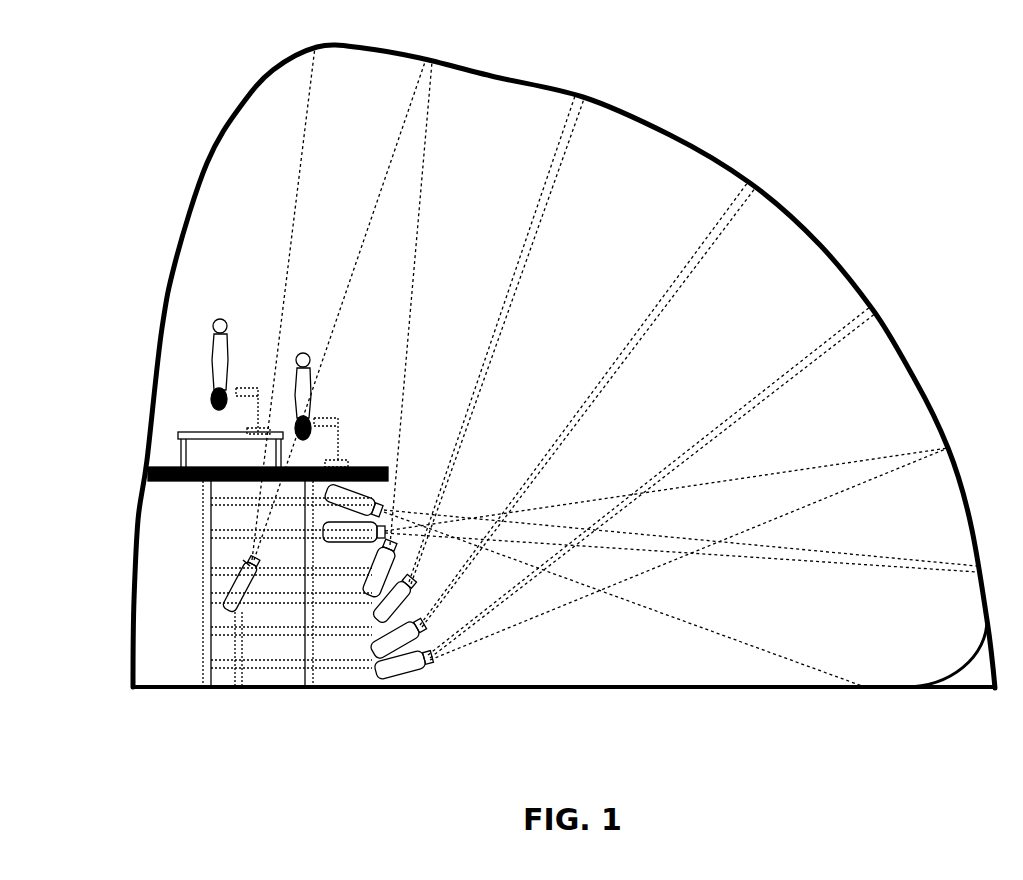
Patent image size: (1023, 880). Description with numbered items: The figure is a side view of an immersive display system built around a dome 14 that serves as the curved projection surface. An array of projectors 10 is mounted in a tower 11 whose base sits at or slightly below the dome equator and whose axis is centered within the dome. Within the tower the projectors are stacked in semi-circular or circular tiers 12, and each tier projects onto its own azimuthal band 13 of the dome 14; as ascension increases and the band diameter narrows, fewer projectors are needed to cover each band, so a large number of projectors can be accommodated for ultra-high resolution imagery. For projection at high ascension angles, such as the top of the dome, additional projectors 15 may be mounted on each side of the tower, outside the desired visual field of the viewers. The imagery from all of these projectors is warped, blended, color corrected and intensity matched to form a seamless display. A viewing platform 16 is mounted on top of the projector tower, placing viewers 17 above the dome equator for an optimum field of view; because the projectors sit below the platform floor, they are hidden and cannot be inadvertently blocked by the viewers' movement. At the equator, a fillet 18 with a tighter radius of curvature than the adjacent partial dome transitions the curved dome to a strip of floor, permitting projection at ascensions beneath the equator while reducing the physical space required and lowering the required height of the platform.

The array of projectors 10 is at (400, 680).
The tower 11 is at (202, 652).
The tiers 12 is at (222, 508).
The azimuthal band 13 is at (873, 312).
The dome 14 is at (564, 366).
The additional projectors 15 is at (227, 598).
The viewing platform 16 is at (172, 481).
The viewers 17 is at (207, 343).
The fillet 18 is at (946, 653).